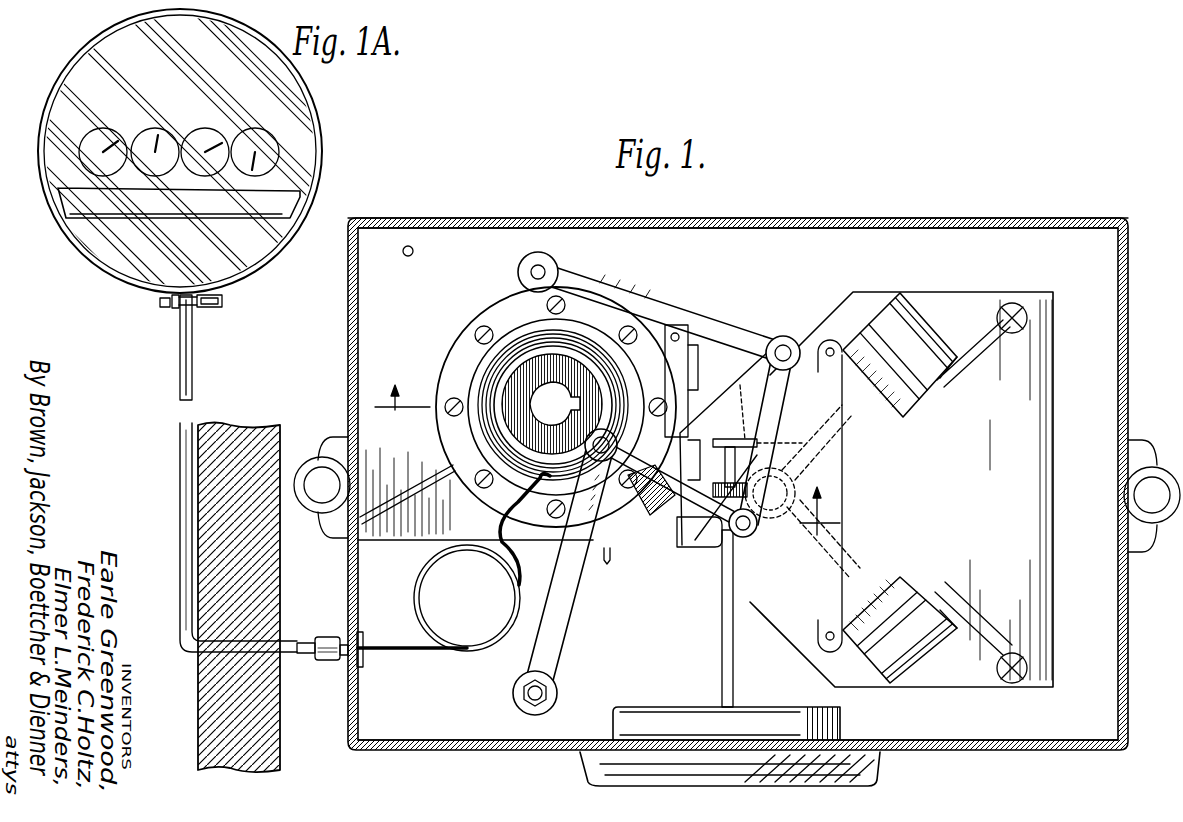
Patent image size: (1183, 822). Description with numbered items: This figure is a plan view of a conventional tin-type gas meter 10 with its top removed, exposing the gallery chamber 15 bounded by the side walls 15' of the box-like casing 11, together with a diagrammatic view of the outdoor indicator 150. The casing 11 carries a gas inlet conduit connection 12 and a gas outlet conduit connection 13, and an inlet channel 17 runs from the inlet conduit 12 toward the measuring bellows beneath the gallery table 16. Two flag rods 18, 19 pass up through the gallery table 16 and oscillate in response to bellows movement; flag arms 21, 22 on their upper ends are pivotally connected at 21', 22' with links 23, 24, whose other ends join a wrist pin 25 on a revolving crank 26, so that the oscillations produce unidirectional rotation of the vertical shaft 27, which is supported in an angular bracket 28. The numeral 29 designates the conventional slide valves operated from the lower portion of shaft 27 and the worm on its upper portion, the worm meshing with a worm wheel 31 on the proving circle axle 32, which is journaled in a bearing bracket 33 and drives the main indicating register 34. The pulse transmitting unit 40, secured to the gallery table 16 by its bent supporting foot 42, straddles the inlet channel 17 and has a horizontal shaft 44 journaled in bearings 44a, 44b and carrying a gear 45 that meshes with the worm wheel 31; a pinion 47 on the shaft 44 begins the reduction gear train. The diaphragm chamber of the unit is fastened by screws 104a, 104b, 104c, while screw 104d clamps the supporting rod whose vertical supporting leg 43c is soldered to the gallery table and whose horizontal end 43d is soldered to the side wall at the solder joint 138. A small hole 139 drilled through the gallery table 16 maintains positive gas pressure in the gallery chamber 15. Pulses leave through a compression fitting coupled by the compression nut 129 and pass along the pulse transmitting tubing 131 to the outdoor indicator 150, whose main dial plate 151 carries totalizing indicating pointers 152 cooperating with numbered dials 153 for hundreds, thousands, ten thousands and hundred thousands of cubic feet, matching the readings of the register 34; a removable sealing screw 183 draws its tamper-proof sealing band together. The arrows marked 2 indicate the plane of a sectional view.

In FIG. 1, the gas meter 10 is at (806, 212).
In FIG. 1, the box-like casing 11 is at (455, 218).
In FIG. 1, the gas inlet conduit connection 12 is at (322, 457).
In FIG. 1, the gas outlet conduit connection 13 is at (1152, 467).
In FIG. 1, the gallery chamber 15 is at (720, 484).
In FIG. 1, the side walls 15' is at (710, 733).
In FIG. 1, the gallery table 16 is at (894, 474).
In FIG. 1, the inlet channel 17 is at (410, 540).
In FIG. 1, the flag rod 18 is at (531, 272).
In FIG. 1, the flag rod 19 is at (513, 693).
In FIG. 1, the flag arm 21 is at (660, 308).
In FIG. 1, the pivotal connection 21' is at (783, 331).
In FIG. 1, the flag arm 22 is at (568, 569).
In FIG. 1, the pivotal connection 22' is at (576, 445).
In FIG. 1, the link 23 is at (785, 402).
In FIG. 1, the link 24 is at (652, 462).
In FIG. 1, the wrist pin 25 is at (735, 532).
In FIG. 1, the revolving crank 26 is at (810, 505).
In FIG. 1, the vertical shaft 27 is at (795, 492).
In FIG. 1, the angular bracket 28 is at (808, 530).
In FIG. 1, the slide valves 29 is at (915, 397).
In FIG. 1, the worm wheel 31 is at (722, 485).
In FIG. 1, the proving circle axle 32 is at (722, 620).
In FIG. 1, the bearing bracket 33 is at (742, 404).
In FIG. 1, the main indicating register 34 is at (692, 710).
In FIG. 1, the pulse transmitting unit 40 is at (447, 348).
In FIG. 1, the supporting foot 42 is at (690, 322).
In FIG. 1, the vertical supporting leg 43c is at (607, 565).
In FIG. 1, the horizontal end of supporting rod 43d is at (416, 478).
In FIG. 1, the horizontally extending shaft 44 is at (688, 435).
In FIG. 1, the bearing 44a is at (665, 355).
In FIG. 1, the bearing 44b is at (677, 530).
In FIG. 1, the gear 45 is at (628, 500).
In FIG. 1, the pinion 47 is at (700, 395).
In FIG. 1, the screw 104a is at (652, 405).
In FIG. 1, the screw 104b is at (446, 410).
In FIG. 1, the screw 104c is at (547, 307).
In FIG. 1, the screw 104d is at (555, 520).
In FIG. 1, the compression nut 129 is at (328, 640).
In FIG. 1A, the pulse transmitting tubing 131 is at (181, 357).
In FIG. 1, the pulse transmitting tubing 131 is at (290, 640).
In FIG. 1, the solder joint 138 is at (408, 492).
In FIG. 1, the small hole 139 is at (414, 250).
In FIG. 1A, the outdoor indicator 150 is at (320, 101).
In FIG. 1A, the main dial plate 151 is at (250, 150).
In FIG. 1A, the totalizing indicating pointers 152 is at (242, 132).
In FIG. 1A, the numbered dials 153 is at (250, 176).
In FIG. 1A, the removable sealing screw 183 is at (160, 302).
In FIG. 1, the section line 2 is at (608, 460).